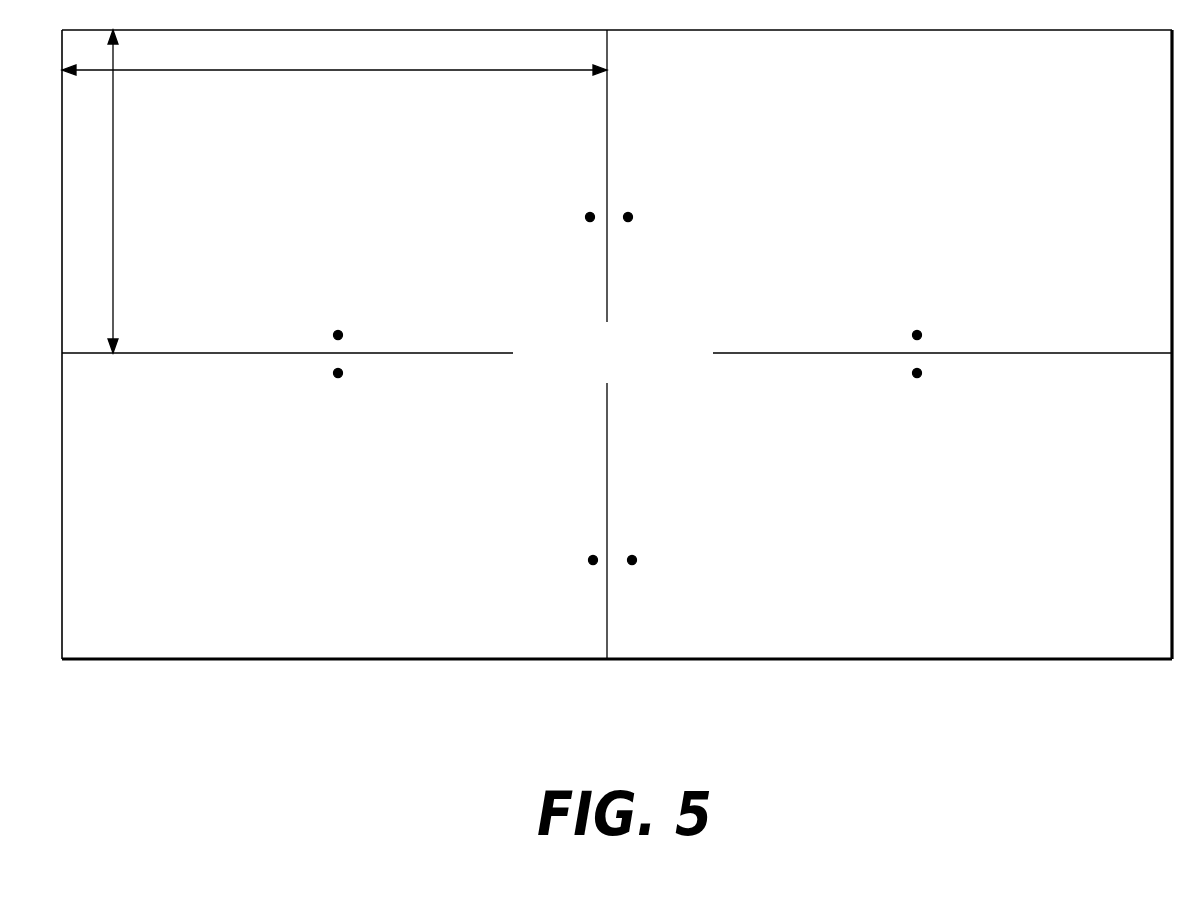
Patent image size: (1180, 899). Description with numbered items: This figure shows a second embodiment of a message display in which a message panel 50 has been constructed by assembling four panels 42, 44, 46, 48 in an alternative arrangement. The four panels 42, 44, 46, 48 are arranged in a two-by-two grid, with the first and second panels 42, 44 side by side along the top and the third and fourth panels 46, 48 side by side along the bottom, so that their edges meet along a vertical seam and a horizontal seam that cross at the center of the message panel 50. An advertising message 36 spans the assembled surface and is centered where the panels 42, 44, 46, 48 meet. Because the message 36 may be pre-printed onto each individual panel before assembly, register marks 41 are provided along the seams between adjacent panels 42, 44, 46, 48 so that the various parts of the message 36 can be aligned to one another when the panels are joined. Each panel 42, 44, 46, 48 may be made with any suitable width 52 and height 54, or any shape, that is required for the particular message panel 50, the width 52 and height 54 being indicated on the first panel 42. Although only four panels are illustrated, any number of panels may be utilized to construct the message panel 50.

The message 36 is at (720, 328).
The register marks 41 is at (624, 214).
The panel 42 is at (497, 163).
The panel 44 is at (1102, 163).
The panel 46 is at (507, 483).
The panel 48 is at (1113, 482).
The message panel 50 is at (963, 661).
The width 52 is at (188, 70).
The height 54 is at (115, 312).